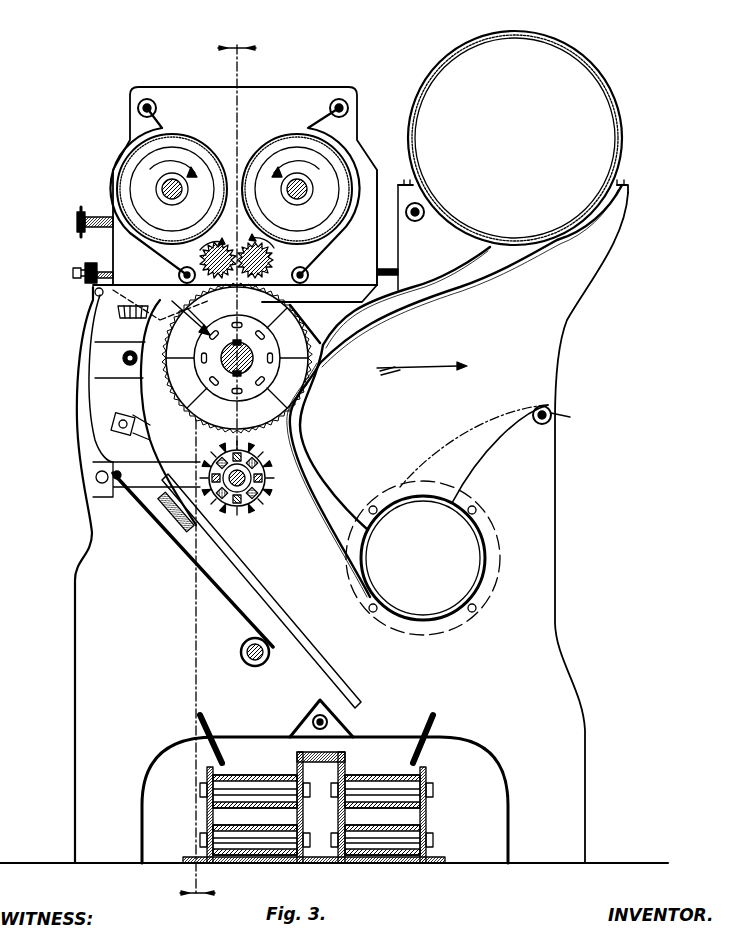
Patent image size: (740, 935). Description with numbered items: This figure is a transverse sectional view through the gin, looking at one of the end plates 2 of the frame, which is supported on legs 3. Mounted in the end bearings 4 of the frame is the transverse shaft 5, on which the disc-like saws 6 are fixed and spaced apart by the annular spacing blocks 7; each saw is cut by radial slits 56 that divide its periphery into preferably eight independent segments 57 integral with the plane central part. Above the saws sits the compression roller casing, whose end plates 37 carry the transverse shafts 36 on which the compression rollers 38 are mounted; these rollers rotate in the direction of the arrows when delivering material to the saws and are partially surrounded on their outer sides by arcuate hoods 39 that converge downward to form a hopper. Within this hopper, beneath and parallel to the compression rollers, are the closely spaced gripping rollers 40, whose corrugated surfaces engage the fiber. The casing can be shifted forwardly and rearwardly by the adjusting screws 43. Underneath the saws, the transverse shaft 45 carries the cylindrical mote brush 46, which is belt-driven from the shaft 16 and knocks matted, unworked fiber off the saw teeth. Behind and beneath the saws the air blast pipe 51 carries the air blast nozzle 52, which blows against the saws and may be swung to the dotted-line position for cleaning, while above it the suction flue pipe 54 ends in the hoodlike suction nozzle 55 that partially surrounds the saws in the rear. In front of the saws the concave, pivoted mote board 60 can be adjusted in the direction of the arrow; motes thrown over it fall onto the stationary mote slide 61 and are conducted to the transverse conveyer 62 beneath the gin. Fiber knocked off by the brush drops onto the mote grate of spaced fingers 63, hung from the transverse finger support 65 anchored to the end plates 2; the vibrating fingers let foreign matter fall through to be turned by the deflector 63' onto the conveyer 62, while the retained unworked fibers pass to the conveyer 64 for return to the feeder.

The end plates 2 is at (556, 492).
The legs 3 is at (585, 810).
The end bearings 4 is at (218, 474).
The transverse shaft 5 is at (254, 357).
The disc-like saws 6 is at (196, 413).
The annular spacing blocks 7 is at (242, 323).
The shaft 16 is at (253, 666).
The transverse shafts 36 is at (316, 196).
The end plates of the compression roller casing 37 is at (349, 108).
The compression rollers 38 is at (262, 137).
The arcuate hoods 39 is at (365, 160).
The gripping rollers 40 is at (268, 258).
The adjusting screws 43 is at (390, 268).
The transverse shaft 45 is at (244, 484).
The cylindrical mote brush 46 is at (262, 455).
The air blast pipe 51 is at (476, 530).
The air blast nozzle 52 is at (512, 400).
The suction flue pipe 54 is at (598, 78).
The suction nozzle 55 is at (432, 283).
The radial slits 56 is at (292, 358).
The independent segments 57 is at (294, 379).
The mote board 60 is at (135, 319).
The stationary mote slide 61 is at (178, 540).
The transverse conveyer 62 is at (250, 775).
The fingers 63 is at (261, 591).
The deflector 63' is at (321, 706).
The conveyer 64 is at (365, 775).
The transverse finger support 65 is at (165, 503).